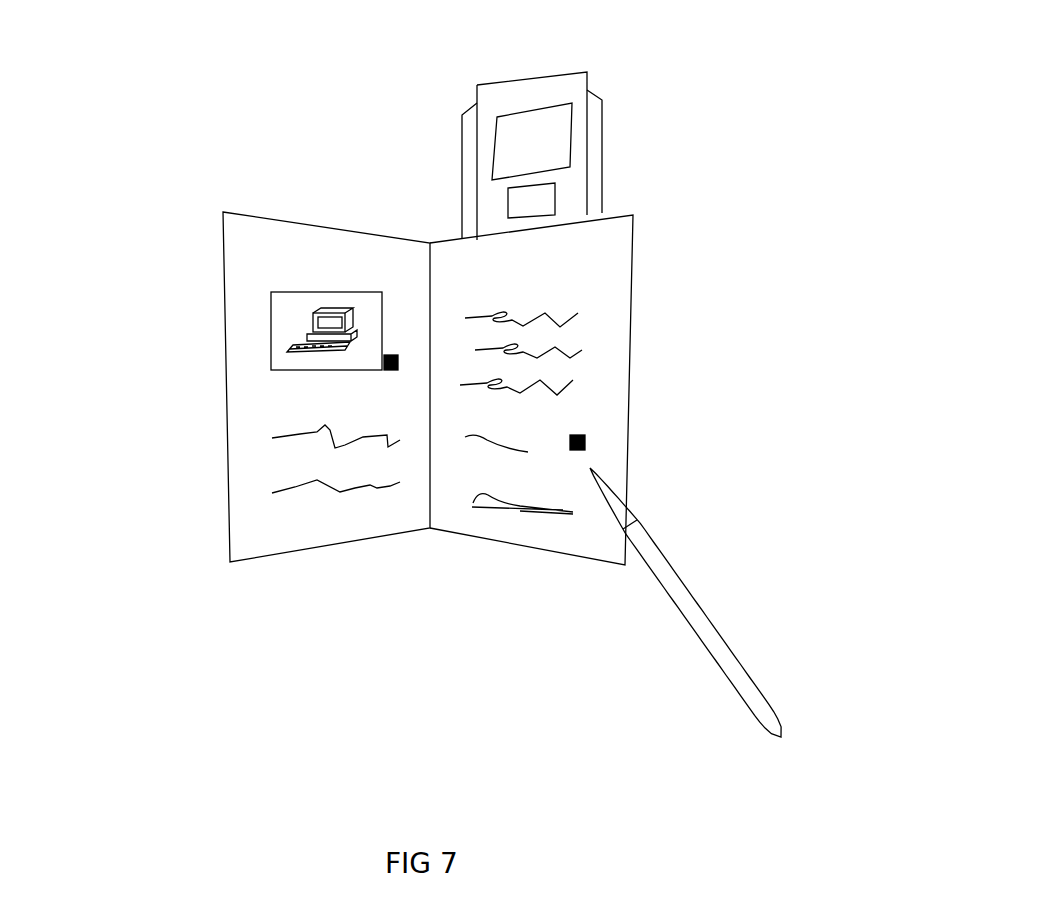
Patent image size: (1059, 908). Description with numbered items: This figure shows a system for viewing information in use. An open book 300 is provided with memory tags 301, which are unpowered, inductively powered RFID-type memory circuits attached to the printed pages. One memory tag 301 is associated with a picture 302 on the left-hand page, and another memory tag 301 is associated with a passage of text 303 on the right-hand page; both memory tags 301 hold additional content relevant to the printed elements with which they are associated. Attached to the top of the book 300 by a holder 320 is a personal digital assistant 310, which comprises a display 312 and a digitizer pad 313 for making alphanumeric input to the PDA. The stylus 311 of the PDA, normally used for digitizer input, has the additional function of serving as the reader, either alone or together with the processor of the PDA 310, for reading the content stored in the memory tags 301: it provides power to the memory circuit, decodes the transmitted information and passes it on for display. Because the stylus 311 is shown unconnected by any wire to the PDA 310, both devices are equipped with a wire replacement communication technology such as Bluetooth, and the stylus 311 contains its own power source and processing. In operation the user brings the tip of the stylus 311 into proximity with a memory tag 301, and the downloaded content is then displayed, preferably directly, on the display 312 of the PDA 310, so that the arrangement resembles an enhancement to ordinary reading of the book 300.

The book 300 is at (224, 512).
The memory tag 301 is at (384, 352).
The picture 302 is at (268, 339).
The passage of text 303 is at (585, 352).
The personal digital assistant 310 is at (587, 72).
The stylus 311 is at (695, 627).
The display 312 is at (572, 132).
The digitizer pad 313 is at (557, 195).
The holder 320 is at (458, 160).